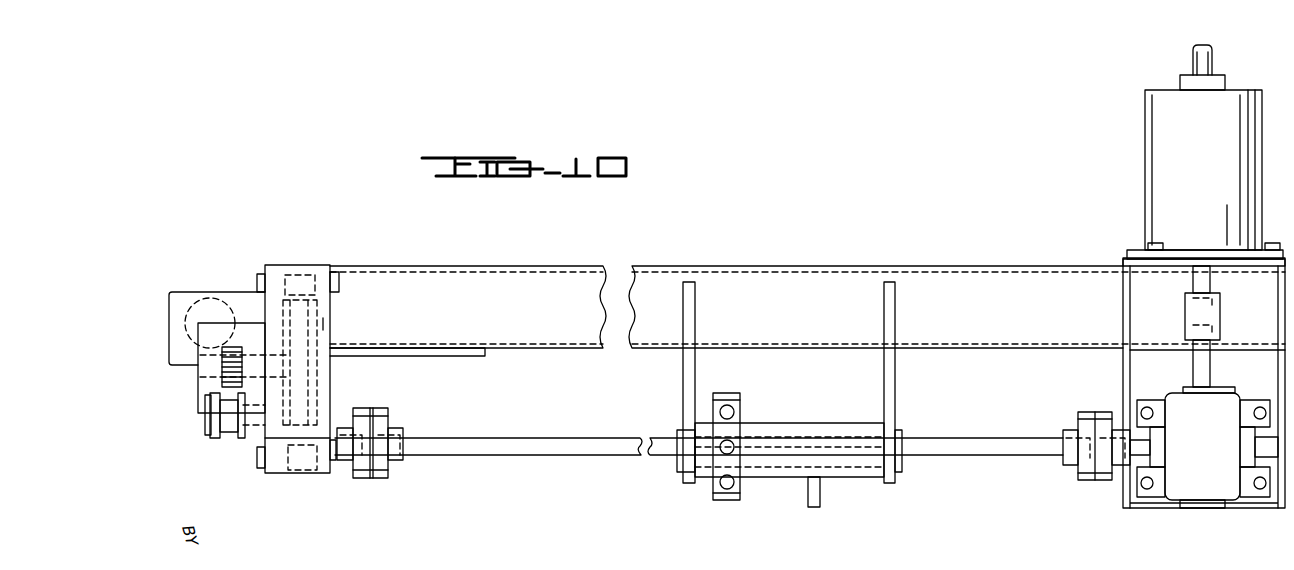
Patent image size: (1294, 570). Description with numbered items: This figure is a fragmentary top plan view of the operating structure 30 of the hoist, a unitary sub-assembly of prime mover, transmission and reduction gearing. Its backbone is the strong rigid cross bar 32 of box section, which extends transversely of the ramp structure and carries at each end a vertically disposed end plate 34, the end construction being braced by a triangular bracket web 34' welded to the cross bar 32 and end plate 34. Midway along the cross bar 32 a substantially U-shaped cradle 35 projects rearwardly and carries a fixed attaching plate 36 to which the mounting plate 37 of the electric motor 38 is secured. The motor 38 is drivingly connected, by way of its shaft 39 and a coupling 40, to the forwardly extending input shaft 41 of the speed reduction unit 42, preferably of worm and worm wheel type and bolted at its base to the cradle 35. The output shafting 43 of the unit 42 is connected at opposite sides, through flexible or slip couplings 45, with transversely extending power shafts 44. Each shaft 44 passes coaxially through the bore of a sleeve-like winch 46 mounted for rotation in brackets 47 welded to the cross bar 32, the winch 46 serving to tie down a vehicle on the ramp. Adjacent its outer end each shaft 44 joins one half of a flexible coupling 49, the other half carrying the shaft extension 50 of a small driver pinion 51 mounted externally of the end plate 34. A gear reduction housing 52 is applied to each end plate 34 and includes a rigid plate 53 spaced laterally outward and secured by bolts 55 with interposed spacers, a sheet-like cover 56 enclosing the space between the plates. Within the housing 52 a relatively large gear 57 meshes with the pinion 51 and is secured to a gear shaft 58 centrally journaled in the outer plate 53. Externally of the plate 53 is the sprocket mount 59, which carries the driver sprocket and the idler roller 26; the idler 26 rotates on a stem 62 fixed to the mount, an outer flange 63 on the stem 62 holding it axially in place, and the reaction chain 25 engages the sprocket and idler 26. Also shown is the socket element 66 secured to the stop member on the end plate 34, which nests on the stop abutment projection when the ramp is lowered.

The reaction chain 25 is at (215, 365).
The idler roller 26 is at (232, 440).
The operating structure 30 is at (946, 497).
The cross bar 32 is at (518, 268).
The end plate 34 is at (351, 376).
The bracket web 34' is at (407, 367).
The cradle 35 is at (1123, 366).
The attaching plate 36 is at (1123, 261).
The mounting plate 37 is at (1127, 253).
The electric motor 38 is at (1162, 164).
The motor shaft 39 is at (1193, 282).
The coupling 40 is at (1185, 325).
The input shaft 41 is at (1202, 365).
The speed reduction unit 42 is at (1187, 485).
The output shafting 43 is at (1140, 458).
The power shaft 44 is at (588, 439).
The flexible coupling 45 is at (1082, 481).
The winch 46 is at (860, 480).
The bracket 47 is at (690, 378).
The flexible coupling 49 is at (390, 418).
The shaft extension 50 is at (349, 468).
The driver pinion 51 is at (300, 475).
The gear reduction housing 52 is at (288, 486).
The rigid plate 53 is at (300, 268).
The bolts 55 is at (262, 274).
The cover 56 is at (323, 318).
The gear 57 is at (336, 340).
The gear shaft 58 is at (289, 362).
The sprocket mount 59 is at (223, 316).
The stem 62 is at (258, 408).
The outer flange 63 is at (208, 425).
The socket element 66 is at (201, 298).